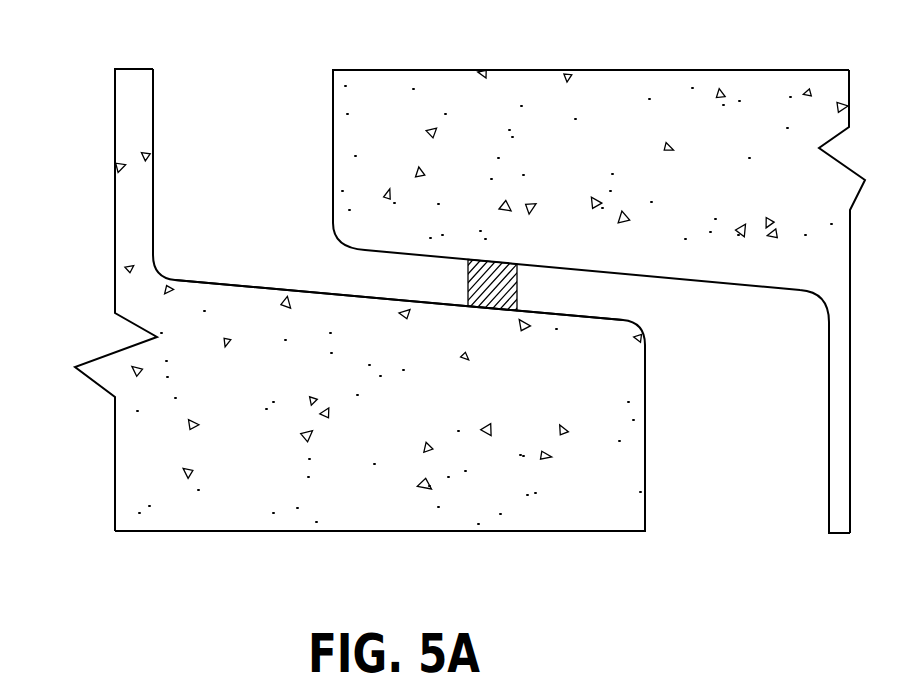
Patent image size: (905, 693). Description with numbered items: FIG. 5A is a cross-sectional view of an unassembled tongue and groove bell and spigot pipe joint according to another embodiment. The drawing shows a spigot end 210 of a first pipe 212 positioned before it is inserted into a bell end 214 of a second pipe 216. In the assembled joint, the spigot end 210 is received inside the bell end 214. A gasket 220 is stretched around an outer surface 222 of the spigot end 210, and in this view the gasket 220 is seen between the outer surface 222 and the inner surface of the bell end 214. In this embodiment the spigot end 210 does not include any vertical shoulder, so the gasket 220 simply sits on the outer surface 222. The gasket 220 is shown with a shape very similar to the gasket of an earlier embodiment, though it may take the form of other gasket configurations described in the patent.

The spigot end 210 is at (477, 520).
The first pipe 212 is at (133, 518).
The bell end 214 is at (497, 83).
The second pipe 216 is at (788, 83).
The gasket 220 is at (517, 290).
The outer surface 222 is at (243, 285).